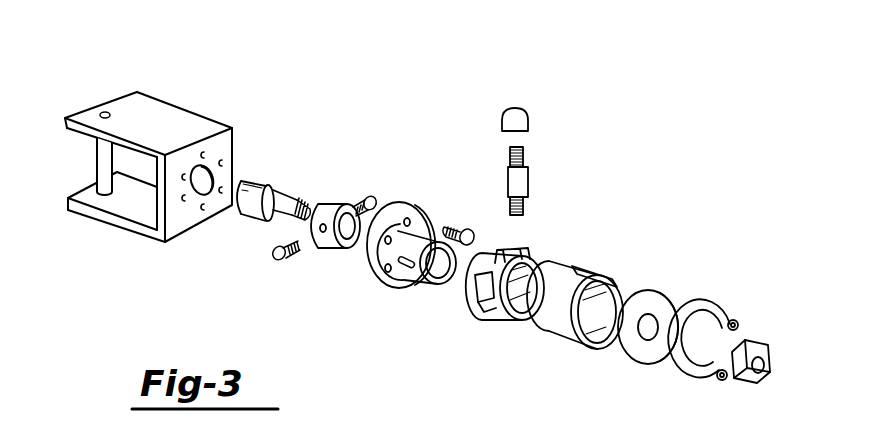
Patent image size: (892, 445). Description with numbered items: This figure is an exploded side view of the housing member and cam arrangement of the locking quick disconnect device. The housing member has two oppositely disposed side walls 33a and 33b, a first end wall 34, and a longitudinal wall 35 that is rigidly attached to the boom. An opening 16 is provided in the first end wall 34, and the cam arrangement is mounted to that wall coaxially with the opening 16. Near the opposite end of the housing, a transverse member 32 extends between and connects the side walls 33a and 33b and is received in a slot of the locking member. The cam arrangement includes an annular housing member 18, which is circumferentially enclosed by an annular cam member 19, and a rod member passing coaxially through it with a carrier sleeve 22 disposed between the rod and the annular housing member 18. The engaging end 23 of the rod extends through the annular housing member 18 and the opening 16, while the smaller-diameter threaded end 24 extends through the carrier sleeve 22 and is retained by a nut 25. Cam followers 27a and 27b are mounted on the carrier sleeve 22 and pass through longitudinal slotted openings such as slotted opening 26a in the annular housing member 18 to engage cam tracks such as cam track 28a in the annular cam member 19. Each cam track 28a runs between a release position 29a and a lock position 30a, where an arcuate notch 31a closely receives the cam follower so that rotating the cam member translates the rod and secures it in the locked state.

The opening 16 is at (208, 178).
The side wall 33a is at (162, 112).
The side wall 33b is at (148, 238).
The first end wall 34 is at (188, 213).
The longitudinal wall 35 is at (137, 192).
The transverse member 32 is at (103, 167).
The engaging end 23 is at (240, 177).
The threaded end 24 is at (303, 208).
The carrier sleeve 22 is at (332, 250).
The cam follower 27a is at (277, 258).
The cam follower 27b is at (378, 200).
The annular housing member 18 is at (424, 229).
The slotted opening 26a is at (400, 266).
The annular cam member 19 is at (497, 318).
The arcuate notch 31a is at (497, 250).
The cam track 28a is at (473, 298).
The lock position 30a is at (482, 293).
The release position 29a is at (541, 262).
The nut 25 is at (741, 373).